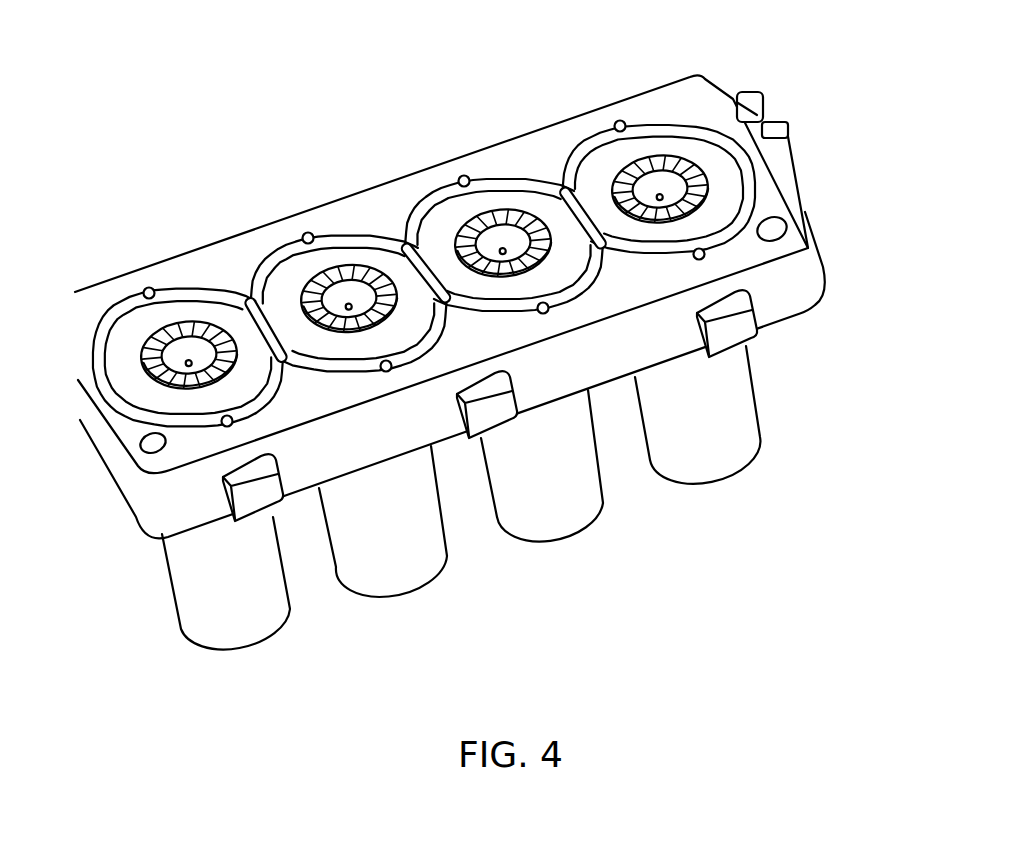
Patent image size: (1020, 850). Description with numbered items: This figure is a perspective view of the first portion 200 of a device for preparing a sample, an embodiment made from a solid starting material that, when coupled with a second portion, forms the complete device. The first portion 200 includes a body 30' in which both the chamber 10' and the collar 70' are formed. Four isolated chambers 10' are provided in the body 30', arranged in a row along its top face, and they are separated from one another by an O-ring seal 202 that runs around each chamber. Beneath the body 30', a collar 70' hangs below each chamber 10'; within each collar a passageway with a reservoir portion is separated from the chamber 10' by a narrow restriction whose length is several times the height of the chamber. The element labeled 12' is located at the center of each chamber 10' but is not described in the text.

The first portion 200 is at (530, 45).
The body 30' is at (450, 289).
The O-ring seal 202 is at (750, 191).
The chamber 10' is at (394, 248).
The light source 12' is at (424, 239).
The collar 70' is at (461, 514).